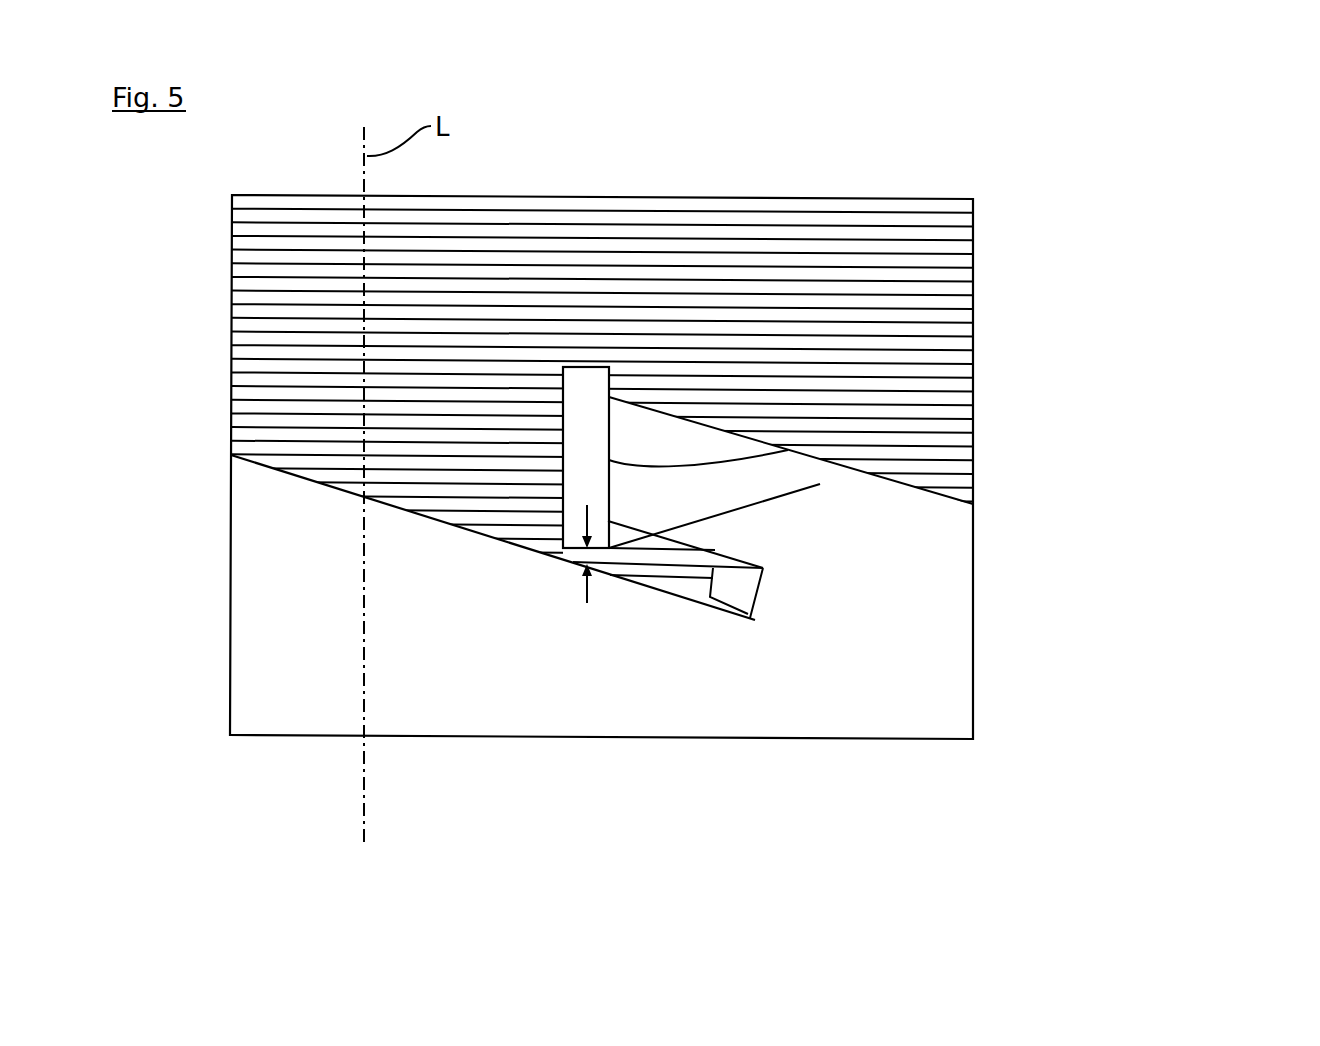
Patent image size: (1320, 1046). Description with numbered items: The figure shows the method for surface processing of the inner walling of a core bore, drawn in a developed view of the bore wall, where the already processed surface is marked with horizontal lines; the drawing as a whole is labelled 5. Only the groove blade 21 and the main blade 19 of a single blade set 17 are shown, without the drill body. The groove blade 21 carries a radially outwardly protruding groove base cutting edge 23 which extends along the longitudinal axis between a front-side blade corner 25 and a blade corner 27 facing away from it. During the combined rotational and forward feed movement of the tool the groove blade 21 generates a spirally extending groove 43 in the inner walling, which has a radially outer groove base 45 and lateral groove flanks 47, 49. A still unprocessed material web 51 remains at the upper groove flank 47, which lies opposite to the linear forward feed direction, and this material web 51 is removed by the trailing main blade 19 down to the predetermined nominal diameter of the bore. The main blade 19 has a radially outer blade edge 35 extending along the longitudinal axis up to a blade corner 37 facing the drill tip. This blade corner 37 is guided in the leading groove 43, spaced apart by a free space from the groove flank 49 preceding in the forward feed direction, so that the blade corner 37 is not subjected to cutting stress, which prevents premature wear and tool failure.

The turbine component / seal arrangement 5 is at (925, 197).
The blade set 17 is at (1248, 365).
The main blade 19 is at (1146, 373).
The groove blade 21 is at (1138, 530).
The groove base cutting edge 23 is at (757, 602).
The front-side blade corner 25 is at (755, 620).
The blade corner facing away 27 is at (763, 568).
The radially outer blade edge 35 is at (788, 450).
The blade corner 37 is at (820, 484).
The spirally extending groove 43 is at (738, 743).
The groove base 45 is at (655, 568).
The upper groove flank 47 is at (697, 553).
The groove flank 49 is at (617, 578).
The material web 51 is at (660, 443).